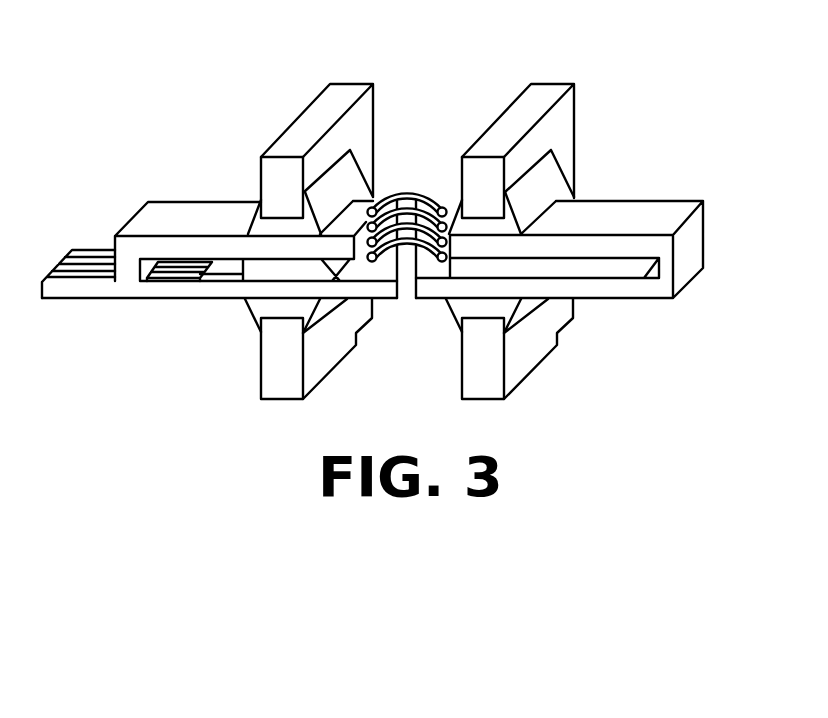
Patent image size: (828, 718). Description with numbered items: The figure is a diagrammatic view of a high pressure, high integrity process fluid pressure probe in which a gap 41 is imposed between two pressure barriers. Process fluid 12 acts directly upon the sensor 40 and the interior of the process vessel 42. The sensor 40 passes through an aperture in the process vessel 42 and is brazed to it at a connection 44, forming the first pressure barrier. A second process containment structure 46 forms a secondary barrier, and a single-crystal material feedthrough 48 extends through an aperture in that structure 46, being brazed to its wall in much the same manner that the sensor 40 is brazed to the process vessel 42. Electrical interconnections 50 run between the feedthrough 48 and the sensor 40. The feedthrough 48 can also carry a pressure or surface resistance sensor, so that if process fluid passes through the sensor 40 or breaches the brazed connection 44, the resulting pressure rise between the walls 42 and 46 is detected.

The process fluid 12 is at (707, 369).
The sensor 40 is at (654, 213).
The gap 41 is at (407, 290).
The process vessel 42 is at (541, 98).
The connection 44 is at (547, 178).
The second process containment structure 46 is at (341, 89).
The single-crystal material feedthrough 48 is at (148, 300).
The electrical interconnections 50 is at (407, 187).